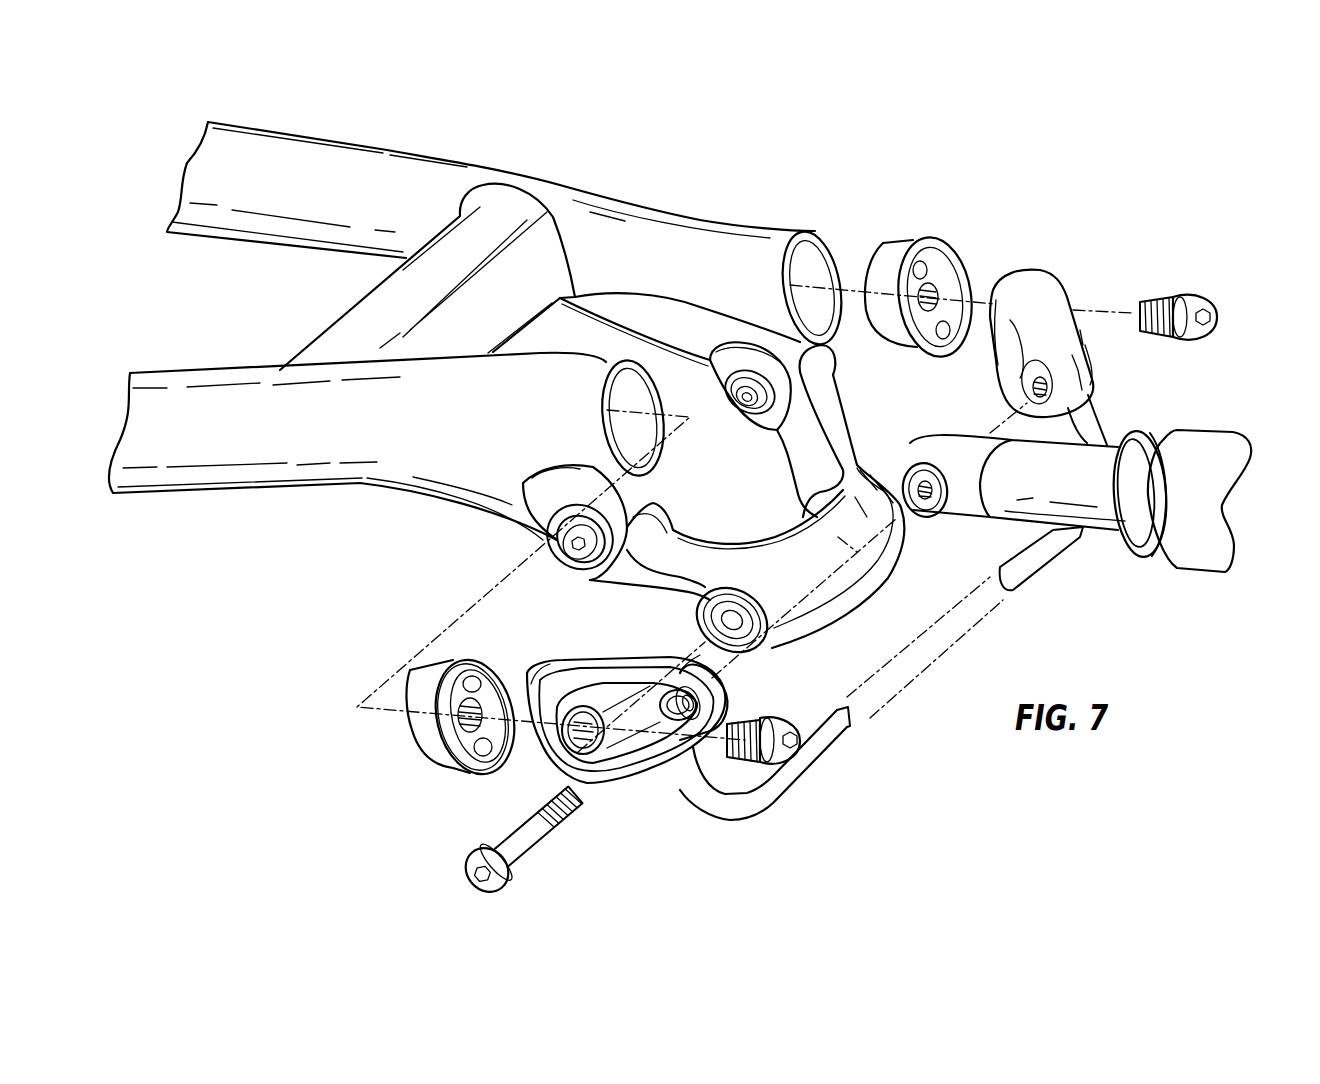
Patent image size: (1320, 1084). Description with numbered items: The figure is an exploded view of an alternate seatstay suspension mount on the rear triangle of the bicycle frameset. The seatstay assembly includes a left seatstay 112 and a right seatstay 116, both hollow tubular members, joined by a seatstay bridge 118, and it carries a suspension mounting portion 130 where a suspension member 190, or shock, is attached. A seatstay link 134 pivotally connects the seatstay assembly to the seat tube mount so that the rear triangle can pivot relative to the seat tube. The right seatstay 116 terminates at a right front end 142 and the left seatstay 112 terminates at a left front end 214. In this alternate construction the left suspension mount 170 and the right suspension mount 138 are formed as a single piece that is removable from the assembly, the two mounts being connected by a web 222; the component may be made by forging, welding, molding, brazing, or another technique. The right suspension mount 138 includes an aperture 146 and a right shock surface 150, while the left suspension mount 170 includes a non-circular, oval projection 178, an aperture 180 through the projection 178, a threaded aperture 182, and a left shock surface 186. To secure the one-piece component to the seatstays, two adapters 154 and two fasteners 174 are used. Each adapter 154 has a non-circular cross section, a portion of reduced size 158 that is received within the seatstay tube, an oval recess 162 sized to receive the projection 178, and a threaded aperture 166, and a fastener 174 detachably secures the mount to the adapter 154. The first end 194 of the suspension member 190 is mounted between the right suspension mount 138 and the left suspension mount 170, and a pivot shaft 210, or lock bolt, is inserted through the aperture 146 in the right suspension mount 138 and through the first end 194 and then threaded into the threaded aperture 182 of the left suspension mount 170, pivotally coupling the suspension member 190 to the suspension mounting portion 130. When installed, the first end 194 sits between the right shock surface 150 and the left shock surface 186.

The left seatstay 112 is at (636, 213).
The right seatstay 116 is at (213, 407).
The seatstay bridge 118 is at (373, 316).
The suspension mounting portion 130 is at (587, 168).
The seatstay link 134 is at (848, 578).
The right suspension mount 138 is at (632, 765).
The right front end 142 is at (613, 416).
The aperture 146 is at (677, 703).
The right shock surface 150 is at (727, 683).
The adapter 154 is at (907, 226).
The portion of reduced size 158 is at (870, 262).
The recess 162 is at (953, 275).
The threaded aperture 166 is at (940, 335).
The left suspension mount 170 is at (1040, 290).
The fastener 174 is at (1186, 300).
The projection 178 is at (996, 290).
The aperture 180 is at (583, 750).
The threaded aperture 182 is at (1028, 393).
The left shock surface 186 is at (1062, 410).
The suspension member 190 is at (1225, 420).
The first end 194 is at (963, 497).
The pivot shaft 210 is at (500, 880).
The left front end 214 is at (834, 232).
The web 222 is at (830, 735).